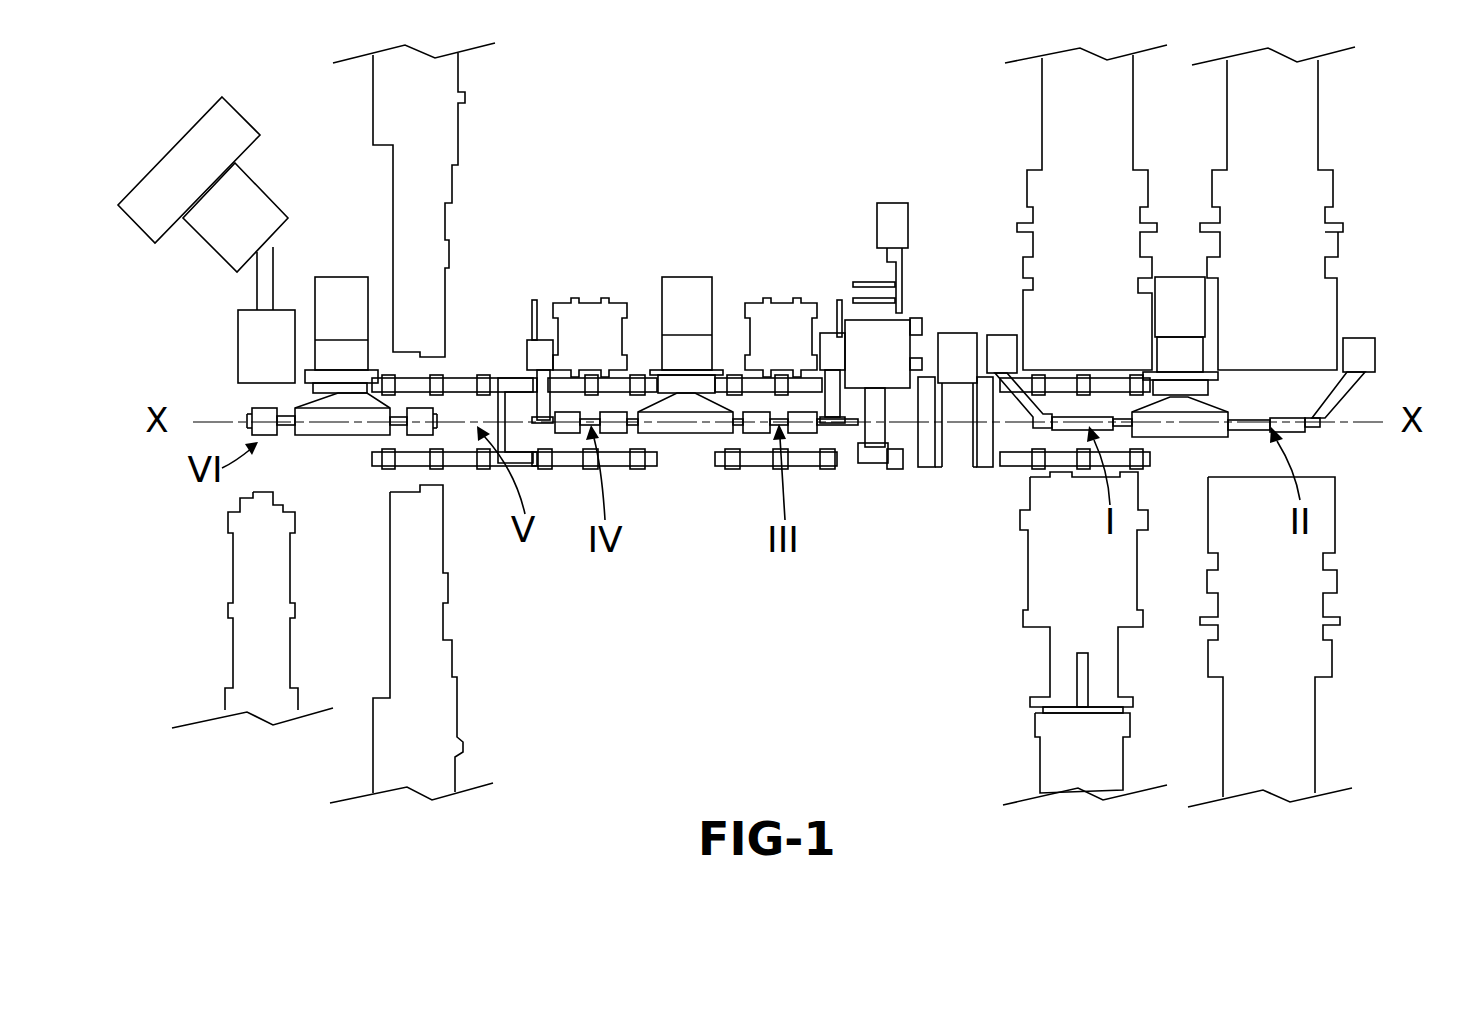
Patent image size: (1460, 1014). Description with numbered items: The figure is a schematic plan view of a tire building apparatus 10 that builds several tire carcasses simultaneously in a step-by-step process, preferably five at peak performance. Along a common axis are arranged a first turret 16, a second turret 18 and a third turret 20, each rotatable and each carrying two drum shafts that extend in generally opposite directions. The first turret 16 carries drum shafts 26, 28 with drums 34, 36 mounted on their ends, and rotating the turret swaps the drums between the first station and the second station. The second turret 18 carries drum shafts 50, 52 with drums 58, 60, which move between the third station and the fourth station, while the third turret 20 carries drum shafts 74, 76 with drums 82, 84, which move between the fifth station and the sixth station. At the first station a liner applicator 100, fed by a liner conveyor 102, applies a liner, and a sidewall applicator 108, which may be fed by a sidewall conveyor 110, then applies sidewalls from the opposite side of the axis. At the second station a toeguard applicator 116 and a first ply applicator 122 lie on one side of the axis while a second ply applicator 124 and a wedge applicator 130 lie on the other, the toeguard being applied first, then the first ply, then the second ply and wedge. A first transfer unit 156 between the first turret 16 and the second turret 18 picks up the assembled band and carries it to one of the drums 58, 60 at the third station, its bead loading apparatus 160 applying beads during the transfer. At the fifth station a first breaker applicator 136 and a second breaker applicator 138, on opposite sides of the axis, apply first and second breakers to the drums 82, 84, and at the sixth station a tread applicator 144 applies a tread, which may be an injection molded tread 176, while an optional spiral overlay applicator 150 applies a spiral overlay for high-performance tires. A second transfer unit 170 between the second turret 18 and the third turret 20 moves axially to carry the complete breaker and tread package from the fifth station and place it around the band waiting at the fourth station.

The tire building apparatus 10 is at (693, 585).
The first turret 16 is at (1183, 432).
The second turret 18 is at (687, 428).
The third turret 20 is at (308, 432).
The drum shaft 26 is at (1122, 427).
The drum shaft 28 is at (1237, 427).
The drum 34 is at (1060, 424).
The drum 36 is at (1300, 428).
The drum shaft 50 is at (746, 428).
The drum shaft 52 is at (630, 428).
The drum 58 is at (802, 428).
The drum 60 is at (567, 428).
The drum shaft 74 is at (395, 430).
The drum shaft 76 is at (290, 428).
The drum 82 is at (421, 423).
The drum 84 is at (265, 416).
The liner applicator 100 is at (1050, 370).
The liner conveyor 102 is at (1072, 147).
The sidewall applicator 108 is at (1043, 480).
The sidewall conveyor 110 is at (1058, 645).
The toeguard applicator 116 is at (1325, 466).
The first ply applicator 122 is at (1230, 480).
The second ply applicator 124 is at (1355, 396).
The wedge applicator 130 is at (1225, 372).
The first breaker applicator 136 is at (422, 358).
The second breaker applicator 138 is at (410, 482).
The tread applicator 144 is at (257, 487).
The spiral overlay applicator 150 is at (277, 318).
The first transfer unit 156 is at (927, 387).
The bead loading apparatus 160 is at (960, 340).
The second transfer unit 170 is at (517, 392).
The injection molded tread 176 is at (892, 208).